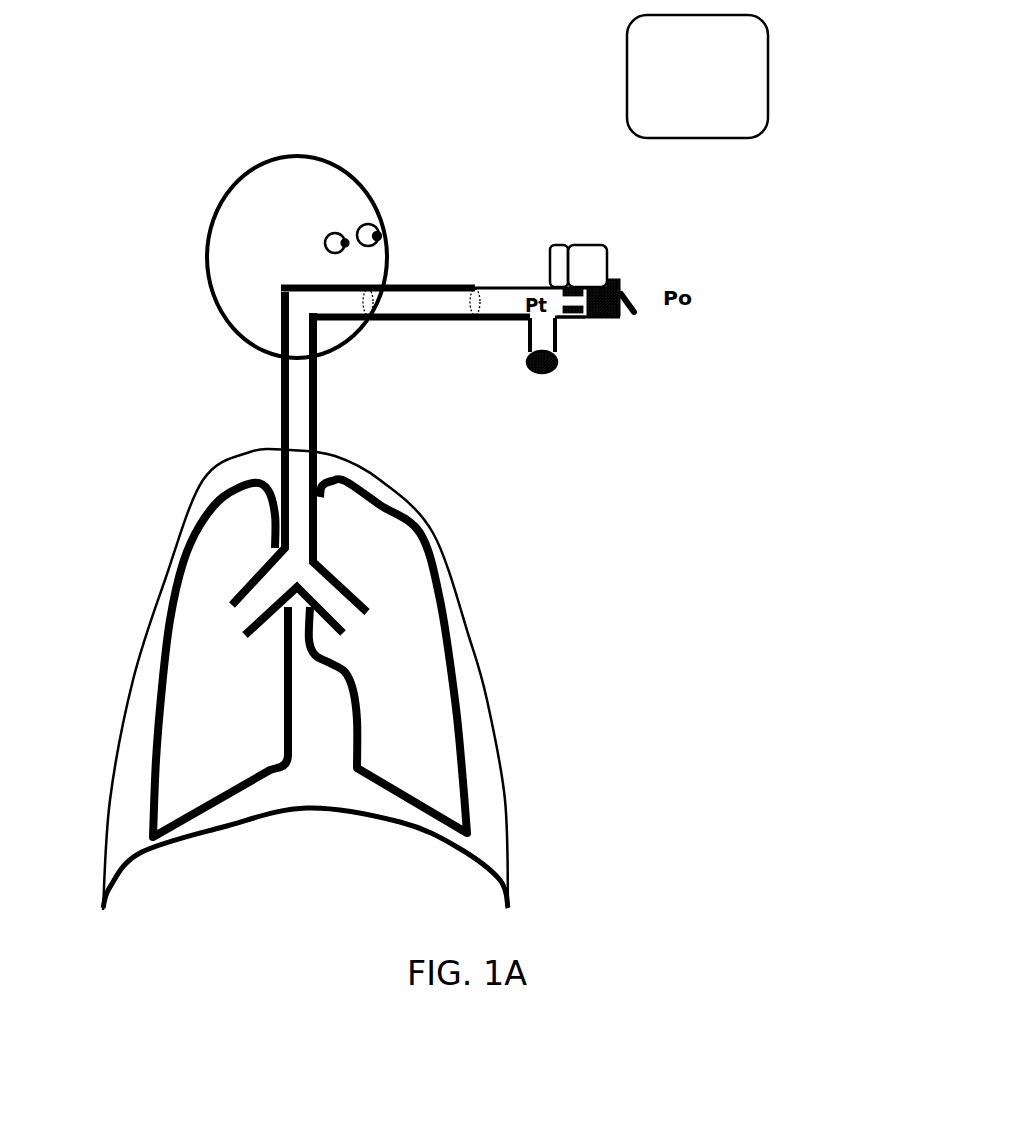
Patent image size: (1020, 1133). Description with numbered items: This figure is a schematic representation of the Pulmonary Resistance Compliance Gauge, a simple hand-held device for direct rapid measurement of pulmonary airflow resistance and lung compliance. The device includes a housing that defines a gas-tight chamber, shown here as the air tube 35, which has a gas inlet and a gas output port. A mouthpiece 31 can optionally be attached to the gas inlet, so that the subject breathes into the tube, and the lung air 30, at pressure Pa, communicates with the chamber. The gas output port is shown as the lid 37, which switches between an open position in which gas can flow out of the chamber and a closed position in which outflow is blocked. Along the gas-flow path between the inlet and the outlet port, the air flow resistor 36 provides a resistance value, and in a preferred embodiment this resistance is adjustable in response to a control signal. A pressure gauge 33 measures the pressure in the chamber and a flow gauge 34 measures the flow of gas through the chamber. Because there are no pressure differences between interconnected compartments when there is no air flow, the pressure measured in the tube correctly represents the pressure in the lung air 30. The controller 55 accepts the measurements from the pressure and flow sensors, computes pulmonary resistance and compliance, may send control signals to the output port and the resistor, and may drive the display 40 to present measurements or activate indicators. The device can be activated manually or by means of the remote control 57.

The lung air 30 is at (413, 645).
The mouthpiece 31 is at (427, 282).
The pressure gauge 33 is at (555, 348).
The flow gauge 34 is at (568, 322).
The air tube 35 is at (497, 320).
The air flow resistor 36 is at (607, 320).
The lid 37 is at (632, 293).
The display 40 is at (560, 245).
The controller 55 is at (577, 245).
The remote control 57 is at (697, 76).